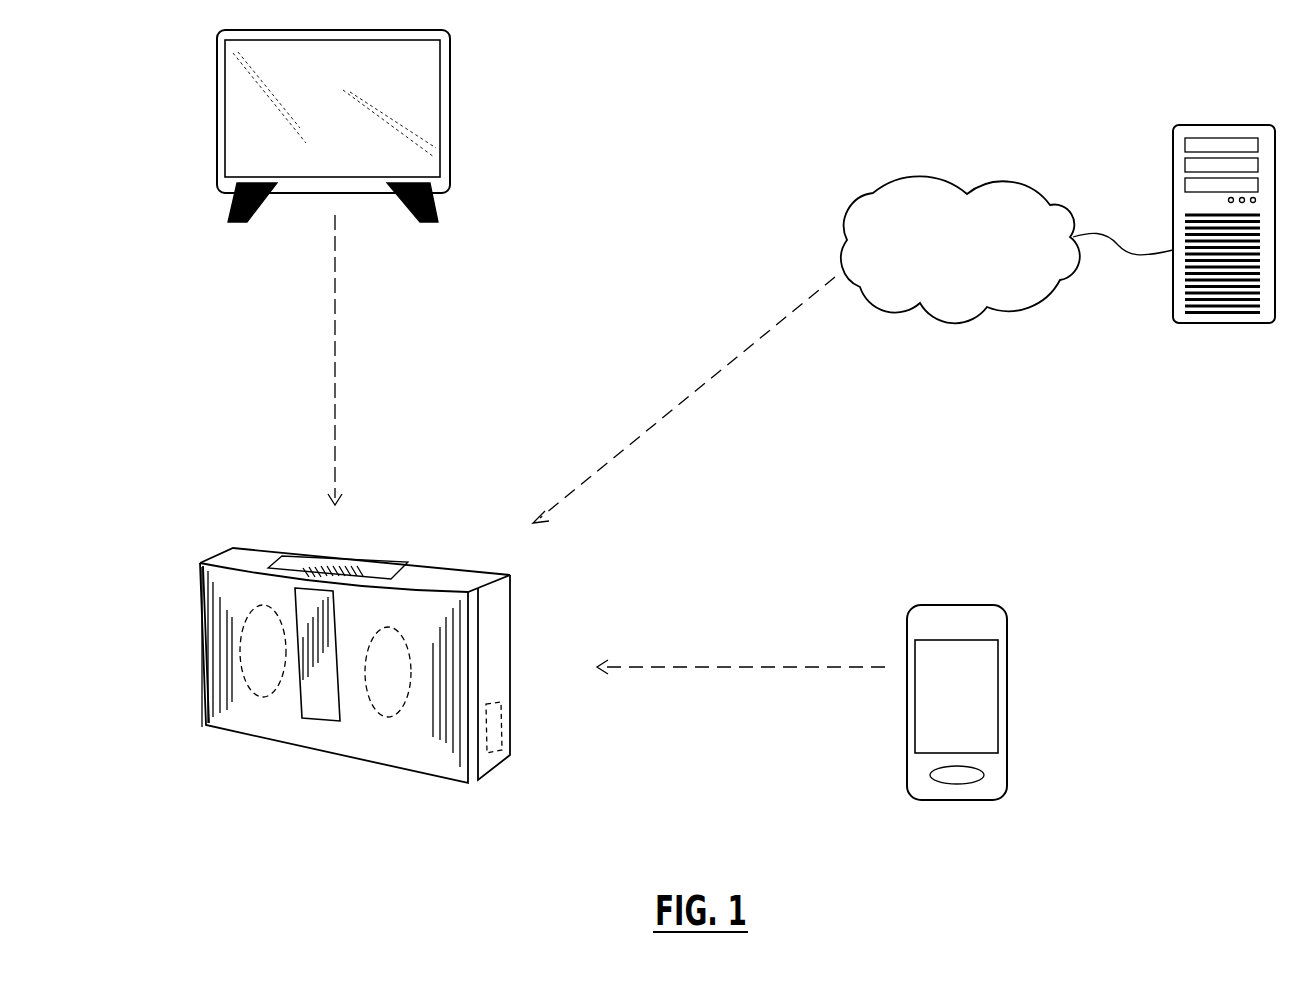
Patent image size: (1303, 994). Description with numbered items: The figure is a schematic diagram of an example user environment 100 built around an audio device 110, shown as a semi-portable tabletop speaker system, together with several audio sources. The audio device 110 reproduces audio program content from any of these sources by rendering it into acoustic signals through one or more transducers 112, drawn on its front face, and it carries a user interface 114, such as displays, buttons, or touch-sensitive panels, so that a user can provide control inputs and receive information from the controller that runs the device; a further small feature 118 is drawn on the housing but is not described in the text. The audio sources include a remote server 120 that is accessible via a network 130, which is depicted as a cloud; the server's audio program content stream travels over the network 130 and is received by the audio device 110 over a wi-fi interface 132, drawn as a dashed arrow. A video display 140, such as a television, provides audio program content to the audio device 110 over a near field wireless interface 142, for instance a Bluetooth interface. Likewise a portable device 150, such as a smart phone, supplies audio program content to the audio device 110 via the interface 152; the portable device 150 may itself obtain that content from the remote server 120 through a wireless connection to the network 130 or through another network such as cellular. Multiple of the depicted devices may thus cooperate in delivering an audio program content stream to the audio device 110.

The user environment 100 is at (860, 88).
The audio device 110 is at (200, 648).
The transducers 112 is at (267, 714).
The user interface 114 is at (377, 572).
The port 118 is at (517, 722).
The remote server 120 is at (1221, 125).
The network 130 is at (997, 176).
The wi-fi interface 132 is at (684, 400).
The video display 140 is at (450, 130).
The near field wireless interface 142 is at (356, 360).
The portable device 150 is at (957, 801).
The interface 152 is at (741, 652).